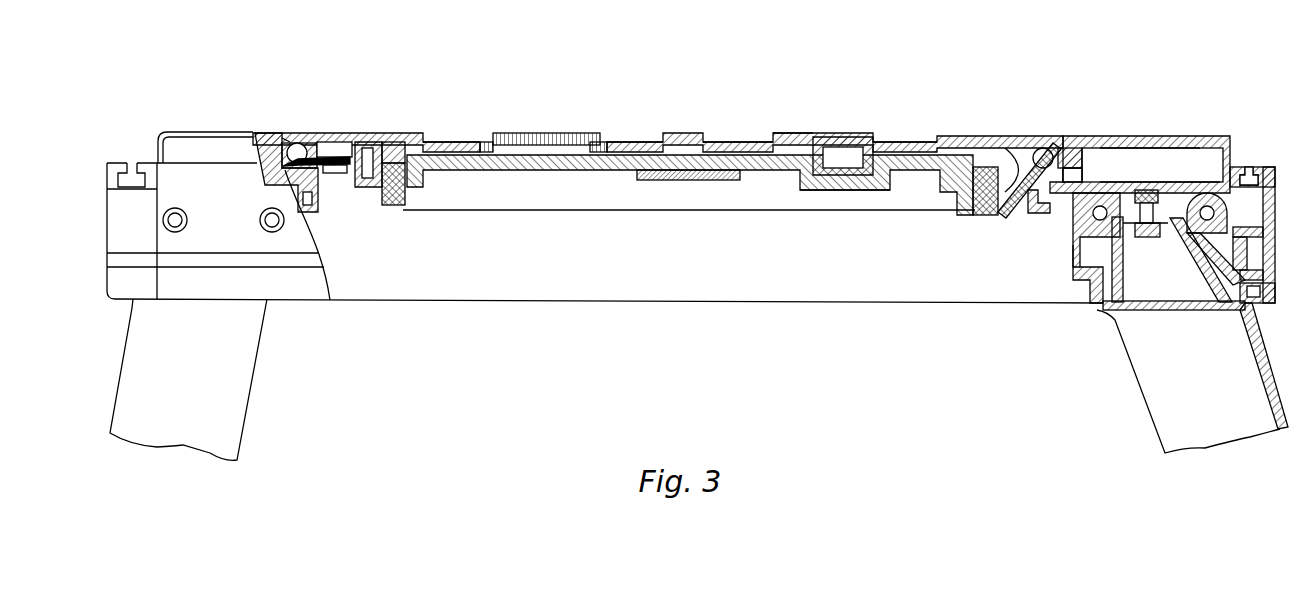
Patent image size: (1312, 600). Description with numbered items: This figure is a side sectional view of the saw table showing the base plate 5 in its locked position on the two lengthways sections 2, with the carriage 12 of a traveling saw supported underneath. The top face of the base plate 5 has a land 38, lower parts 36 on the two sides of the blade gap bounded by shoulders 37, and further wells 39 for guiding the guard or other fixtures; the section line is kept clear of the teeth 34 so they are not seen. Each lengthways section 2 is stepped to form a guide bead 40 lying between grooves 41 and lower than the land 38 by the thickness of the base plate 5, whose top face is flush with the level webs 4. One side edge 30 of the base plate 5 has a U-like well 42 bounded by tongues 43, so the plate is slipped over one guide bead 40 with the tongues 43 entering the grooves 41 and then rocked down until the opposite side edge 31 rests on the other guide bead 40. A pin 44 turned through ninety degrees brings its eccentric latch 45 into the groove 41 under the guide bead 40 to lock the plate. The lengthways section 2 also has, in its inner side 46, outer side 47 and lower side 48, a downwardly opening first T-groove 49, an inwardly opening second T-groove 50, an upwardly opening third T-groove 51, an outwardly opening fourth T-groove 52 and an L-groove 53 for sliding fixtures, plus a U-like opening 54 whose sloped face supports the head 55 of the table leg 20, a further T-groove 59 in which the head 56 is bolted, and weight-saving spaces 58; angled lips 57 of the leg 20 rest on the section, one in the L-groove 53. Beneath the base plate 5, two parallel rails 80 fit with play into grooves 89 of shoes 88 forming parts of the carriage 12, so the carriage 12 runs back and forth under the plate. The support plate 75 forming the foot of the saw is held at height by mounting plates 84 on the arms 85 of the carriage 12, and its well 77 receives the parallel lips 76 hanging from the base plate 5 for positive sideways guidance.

The lengthways section 2 is at (193, 141).
The web 4 is at (1133, 136).
The base plate 5 is at (942, 136).
The carriage 12 is at (741, 217).
The table leg 20 is at (1262, 378).
The side edge 30 is at (1062, 138).
The side edge 31 is at (283, 137).
The teeth 34 is at (538, 137).
The lower parts 36 is at (477, 141).
The shoulders 37 is at (440, 141).
The land 38 is at (783, 133).
The wells 39 is at (722, 141).
The guide bead 40 is at (291, 143).
The grooves 41 is at (1086, 174).
The well 42 is at (1030, 146).
The tongues 43 is at (1050, 143).
The pin 44 is at (327, 137).
The latch 45 is at (260, 150).
The inner side 46 is at (1068, 246).
The outer side 47 is at (1280, 178).
The lower side 48 is at (1180, 220).
The first T-groove 49 is at (1056, 200).
The second T-groove 50 is at (1072, 258).
The third T-groove 51 is at (132, 163).
The fourth T-groove 52 is at (1208, 290).
The L-groove 53 is at (1260, 303).
The U-like opening 54 is at (1213, 265).
The head 55 is at (1182, 258).
The head 56 is at (1104, 310).
The angled lips 57 is at (1092, 302).
The spaces 58 is at (1153, 162).
The T-groove 59 is at (1156, 180).
The support plate 75 is at (522, 180).
The lips 76 is at (850, 153).
The well 77 is at (822, 185).
The rails 80 is at (368, 165).
The mounting plates 84 is at (650, 180).
The arm 85 is at (465, 200).
The shoes 88 is at (393, 175).
The grooves 89 is at (394, 215).